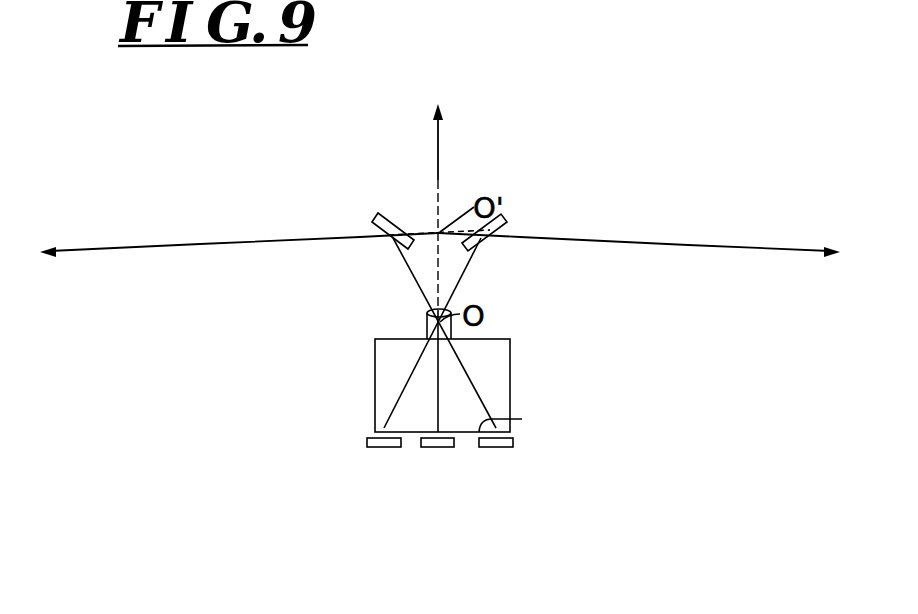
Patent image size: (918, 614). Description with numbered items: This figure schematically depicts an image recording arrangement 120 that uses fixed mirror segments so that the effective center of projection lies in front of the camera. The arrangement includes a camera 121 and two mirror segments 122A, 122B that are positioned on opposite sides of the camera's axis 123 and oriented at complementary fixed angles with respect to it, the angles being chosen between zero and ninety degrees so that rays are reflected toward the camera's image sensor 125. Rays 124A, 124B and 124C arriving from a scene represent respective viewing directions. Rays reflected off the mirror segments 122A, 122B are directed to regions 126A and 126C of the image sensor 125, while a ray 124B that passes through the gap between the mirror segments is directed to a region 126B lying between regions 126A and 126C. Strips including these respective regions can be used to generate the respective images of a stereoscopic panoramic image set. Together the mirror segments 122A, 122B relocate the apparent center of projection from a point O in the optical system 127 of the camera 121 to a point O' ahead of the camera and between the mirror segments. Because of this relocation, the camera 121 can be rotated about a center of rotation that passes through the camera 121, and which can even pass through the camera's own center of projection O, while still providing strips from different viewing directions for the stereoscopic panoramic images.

The image recording arrangement 120 is at (262, 523).
The camera 121 is at (375, 382).
The mirror segment 122A is at (372, 222).
The mirror segment 122B is at (520, 218).
The camera's axis 123 is at (442, 403).
The ray 124A is at (688, 246).
The ray 124B is at (440, 168).
The ray 124C is at (132, 247).
The image sensor 125 is at (527, 423).
The region 126A is at (367, 442).
The region 126B is at (440, 449).
The region 126C is at (513, 443).
The optical system 127 is at (426, 334).